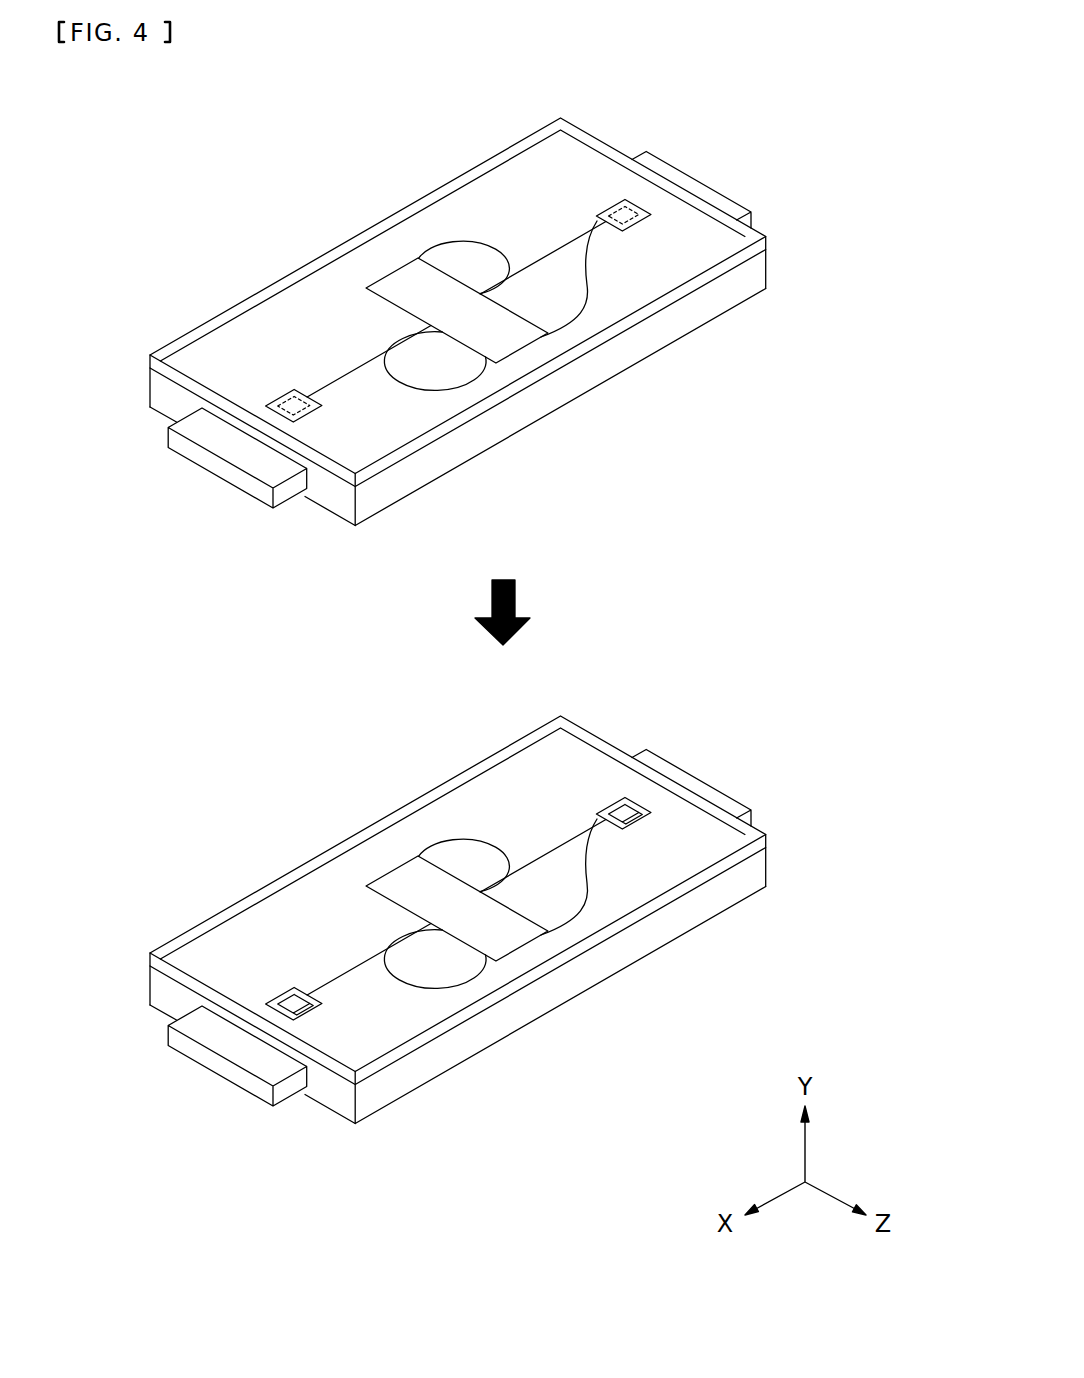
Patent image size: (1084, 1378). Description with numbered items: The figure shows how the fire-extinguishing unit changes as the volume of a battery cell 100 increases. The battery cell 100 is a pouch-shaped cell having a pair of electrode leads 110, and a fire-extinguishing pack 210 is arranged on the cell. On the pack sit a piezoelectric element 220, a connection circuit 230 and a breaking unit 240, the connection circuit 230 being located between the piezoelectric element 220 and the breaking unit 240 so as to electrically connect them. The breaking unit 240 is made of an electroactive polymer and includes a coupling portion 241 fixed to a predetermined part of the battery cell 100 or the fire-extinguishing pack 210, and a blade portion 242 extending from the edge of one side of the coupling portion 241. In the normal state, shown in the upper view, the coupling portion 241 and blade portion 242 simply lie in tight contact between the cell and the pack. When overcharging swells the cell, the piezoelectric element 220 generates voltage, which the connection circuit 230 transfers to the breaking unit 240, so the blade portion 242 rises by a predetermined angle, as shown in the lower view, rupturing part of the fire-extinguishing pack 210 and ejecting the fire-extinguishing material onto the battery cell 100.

The battery cell 100 is at (335, 498).
The electrode lead 110 is at (170, 428).
The fire-extinguishing pack 210 is at (215, 340).
The piezoelectric element 220 is at (413, 272).
The connection circuit 230 is at (316, 392).
The breaking unit 240 is at (763, 484).
The coupling portion 241 is at (648, 226).
The blade portion 242 is at (640, 203).